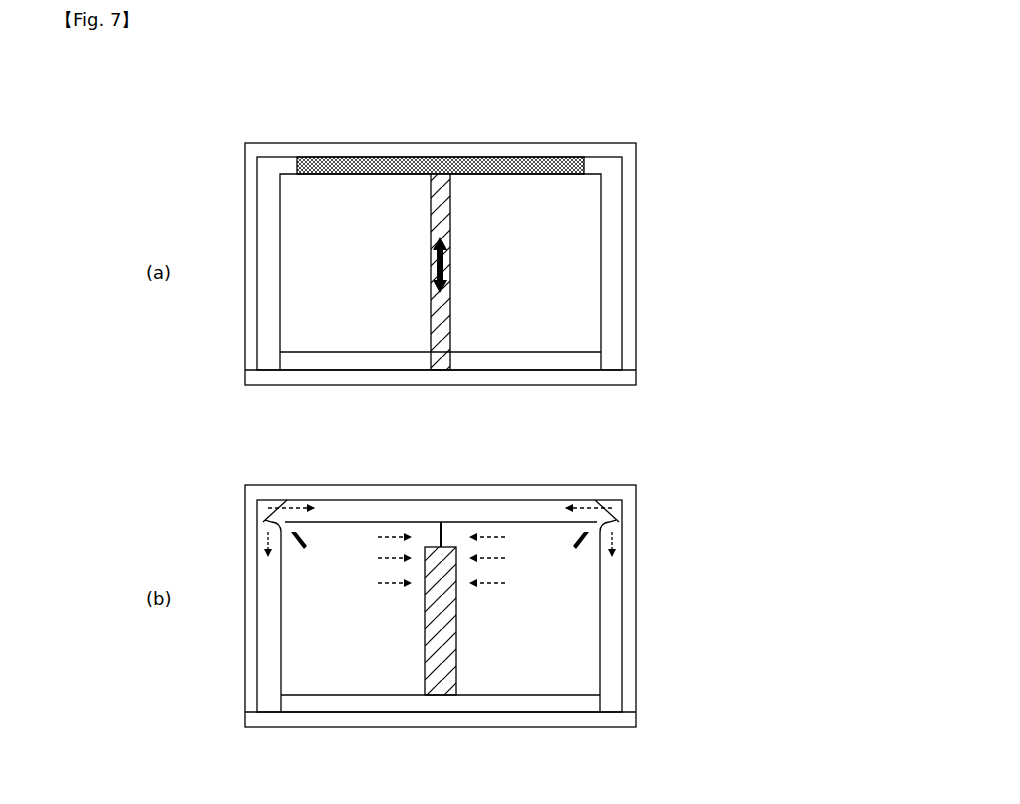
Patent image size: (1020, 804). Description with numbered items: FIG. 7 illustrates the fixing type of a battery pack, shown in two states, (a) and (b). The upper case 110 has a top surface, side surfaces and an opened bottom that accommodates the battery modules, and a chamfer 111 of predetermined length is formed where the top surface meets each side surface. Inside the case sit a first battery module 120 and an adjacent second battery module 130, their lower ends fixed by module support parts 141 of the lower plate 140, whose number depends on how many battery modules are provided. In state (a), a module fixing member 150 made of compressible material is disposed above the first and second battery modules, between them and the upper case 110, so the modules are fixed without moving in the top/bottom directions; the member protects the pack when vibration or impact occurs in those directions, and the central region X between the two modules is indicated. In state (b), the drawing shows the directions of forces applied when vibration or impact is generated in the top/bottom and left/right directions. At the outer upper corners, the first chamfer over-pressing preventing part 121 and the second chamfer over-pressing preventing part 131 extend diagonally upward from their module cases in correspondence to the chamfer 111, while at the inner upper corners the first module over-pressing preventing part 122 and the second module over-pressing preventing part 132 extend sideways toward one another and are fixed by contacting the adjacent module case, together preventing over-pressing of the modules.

The upper case 110 is at (628, 246).
The chamfer 111 is at (268, 506).
The first battery module 120 is at (336, 195).
The first chamfer over-pressing preventing part 121 is at (274, 514).
The first module over-pressing preventing part 122 is at (432, 536).
The second battery module 130 is at (561, 195).
The second chamfer over-pressing preventing part 131 is at (612, 516).
The second module over-pressing preventing part 132 is at (449, 536).
The lower plate 140 is at (628, 379).
The module support part 141 is at (598, 361).
The module fixing member 150 is at (497, 168).
The center bar / gap X is at (442, 188).